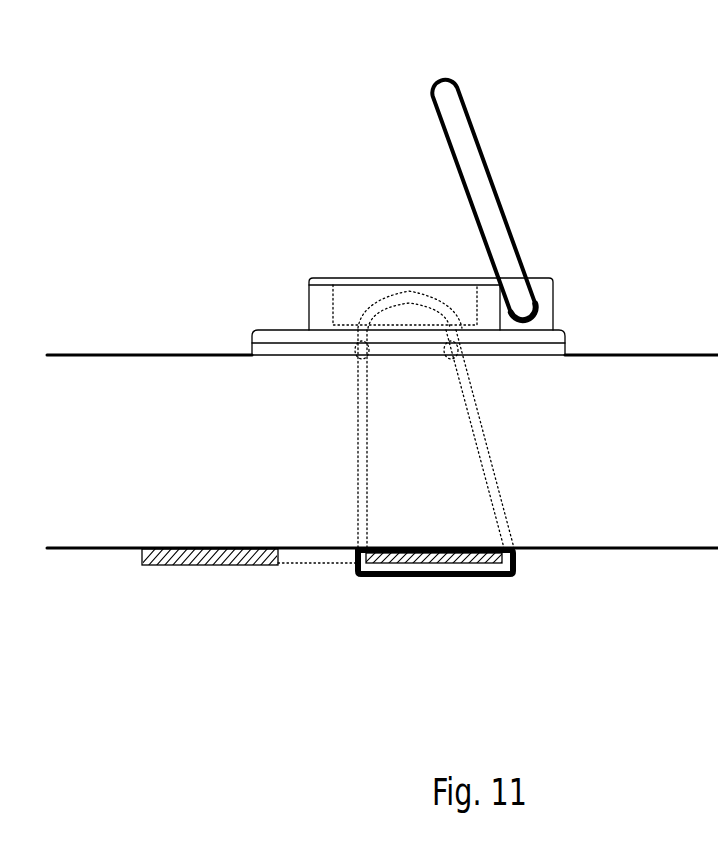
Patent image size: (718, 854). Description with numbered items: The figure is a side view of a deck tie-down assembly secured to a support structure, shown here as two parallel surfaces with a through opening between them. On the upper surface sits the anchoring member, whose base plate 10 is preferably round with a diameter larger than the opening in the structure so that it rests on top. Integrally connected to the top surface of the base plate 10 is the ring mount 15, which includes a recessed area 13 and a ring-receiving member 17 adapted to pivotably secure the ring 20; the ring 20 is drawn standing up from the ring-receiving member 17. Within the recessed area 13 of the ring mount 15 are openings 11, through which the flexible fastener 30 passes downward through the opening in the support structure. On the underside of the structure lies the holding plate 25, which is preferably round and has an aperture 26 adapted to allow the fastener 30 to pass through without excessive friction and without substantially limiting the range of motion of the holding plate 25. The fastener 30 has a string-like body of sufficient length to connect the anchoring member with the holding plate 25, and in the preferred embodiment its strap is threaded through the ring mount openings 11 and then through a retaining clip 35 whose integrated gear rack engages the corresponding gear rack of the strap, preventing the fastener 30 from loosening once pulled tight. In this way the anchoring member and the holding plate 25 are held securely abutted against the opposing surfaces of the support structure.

The base plate 10 is at (257, 335).
The opening 11 is at (360, 345).
The recessed area 13 is at (352, 302).
The ring mount 15 is at (323, 312).
The ring-receiving member 17 is at (548, 290).
The ring 20 is at (468, 148).
The holding plate 25 is at (202, 563).
The aperture 26 is at (307, 562).
The flexible fastener 30 is at (500, 500).
The retaining clip 35 is at (407, 290).